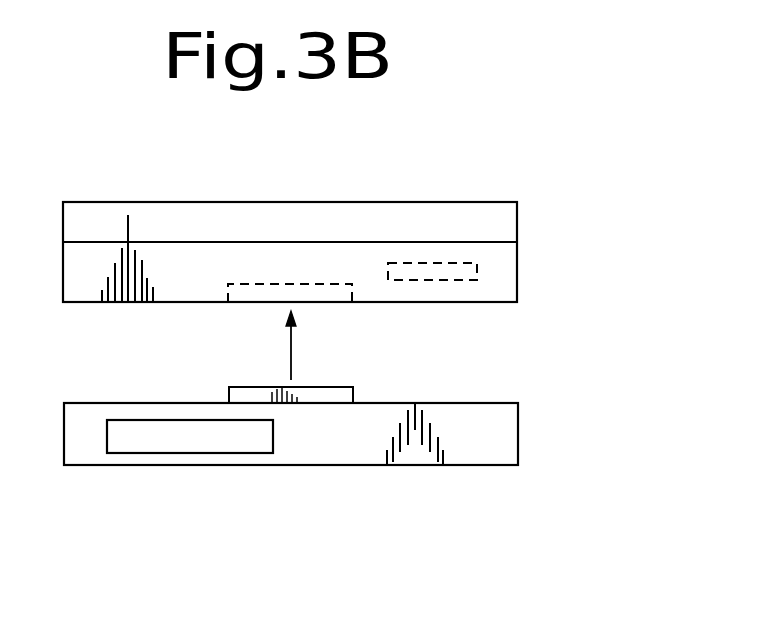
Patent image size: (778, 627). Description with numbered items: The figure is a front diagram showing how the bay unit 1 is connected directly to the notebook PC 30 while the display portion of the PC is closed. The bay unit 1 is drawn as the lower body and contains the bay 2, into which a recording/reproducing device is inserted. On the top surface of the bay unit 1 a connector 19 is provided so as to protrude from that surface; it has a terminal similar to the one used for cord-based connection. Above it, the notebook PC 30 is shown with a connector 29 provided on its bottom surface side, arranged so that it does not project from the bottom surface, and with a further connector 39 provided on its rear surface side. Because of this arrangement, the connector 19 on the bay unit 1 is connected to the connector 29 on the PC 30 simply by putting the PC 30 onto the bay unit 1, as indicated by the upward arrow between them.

The bay unit 1 is at (503, 432).
The bay 2 is at (179, 441).
The connector 19 is at (333, 392).
The connector 29 is at (323, 293).
The notebook PC 30 is at (538, 236).
The connector 39 is at (477, 271).